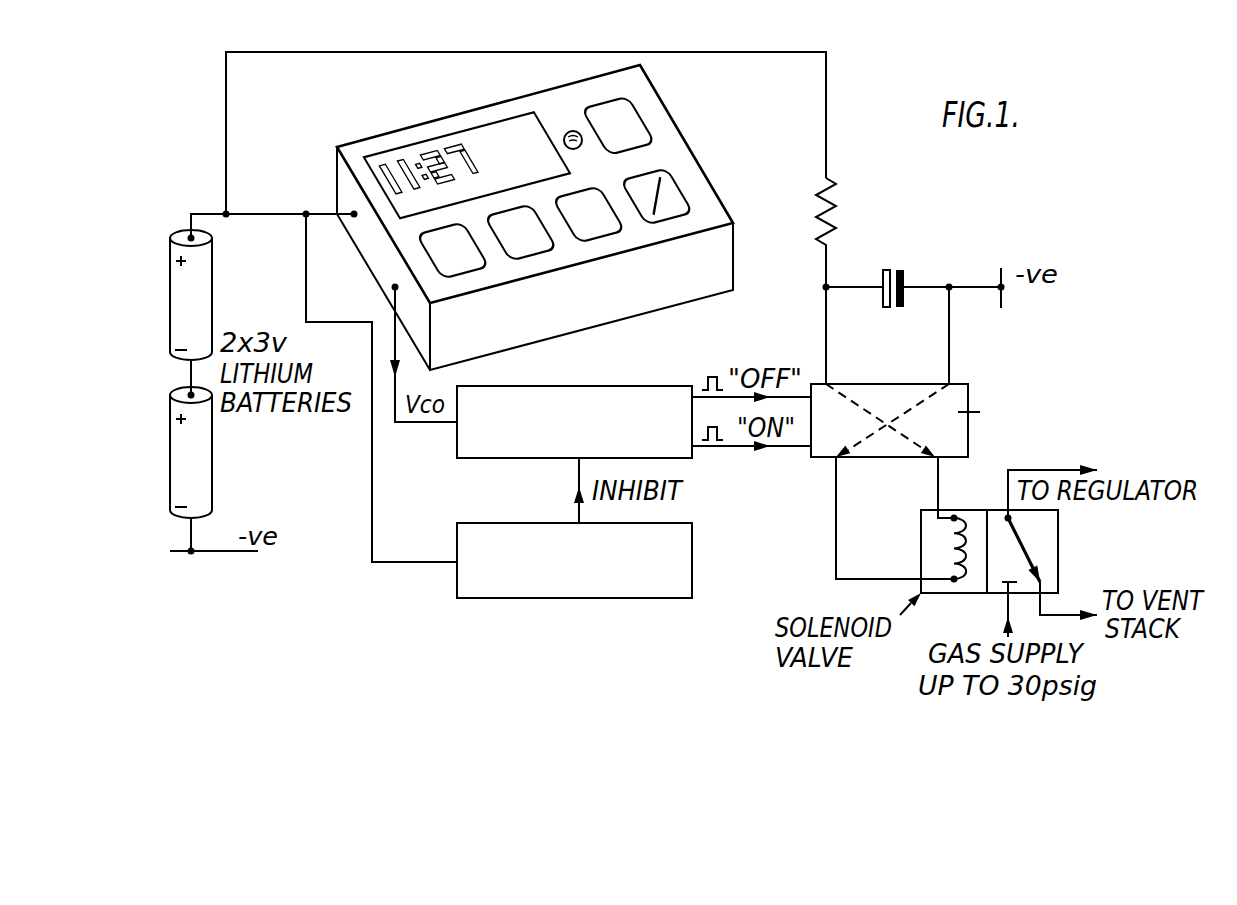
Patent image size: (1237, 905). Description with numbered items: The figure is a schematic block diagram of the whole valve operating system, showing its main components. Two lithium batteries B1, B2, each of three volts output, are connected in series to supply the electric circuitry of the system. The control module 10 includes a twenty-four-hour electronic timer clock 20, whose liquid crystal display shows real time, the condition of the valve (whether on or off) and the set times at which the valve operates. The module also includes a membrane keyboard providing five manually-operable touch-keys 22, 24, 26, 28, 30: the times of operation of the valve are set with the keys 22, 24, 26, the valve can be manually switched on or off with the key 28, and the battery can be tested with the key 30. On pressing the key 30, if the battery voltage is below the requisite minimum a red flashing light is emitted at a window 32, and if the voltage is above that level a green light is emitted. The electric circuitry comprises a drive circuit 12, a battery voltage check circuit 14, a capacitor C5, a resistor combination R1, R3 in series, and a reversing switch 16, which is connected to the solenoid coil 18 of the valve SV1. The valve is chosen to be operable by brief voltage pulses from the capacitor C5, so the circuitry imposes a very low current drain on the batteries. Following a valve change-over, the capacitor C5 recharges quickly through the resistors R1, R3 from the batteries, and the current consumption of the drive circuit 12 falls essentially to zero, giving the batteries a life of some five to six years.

The control module 10 is at (535, 216).
The drive circuit 12 is at (652, 372).
The battery voltage check circuit 14 is at (500, 505).
The reversing switch 16 is at (967, 385).
The solenoid coil 18 is at (952, 545).
The electronic timer clock CL20 20 is at (467, 165).
The touch-key 22 is at (453, 250).
The touch-key 24 is at (521, 232).
The touch-key 26 is at (589, 214).
The touch-key 28 is at (657, 196).
The touch-key 30 is at (618, 126).
The window 32 is at (562, 119).
The lithium battery B1 is at (204, 278).
The lithium battery B2 is at (204, 470).
The resistor R1 is at (866, 232).
The resistor R3 is at (866, 232).
The capacitor C5 is at (913, 281).
The valve SV1 is at (1012, 551).